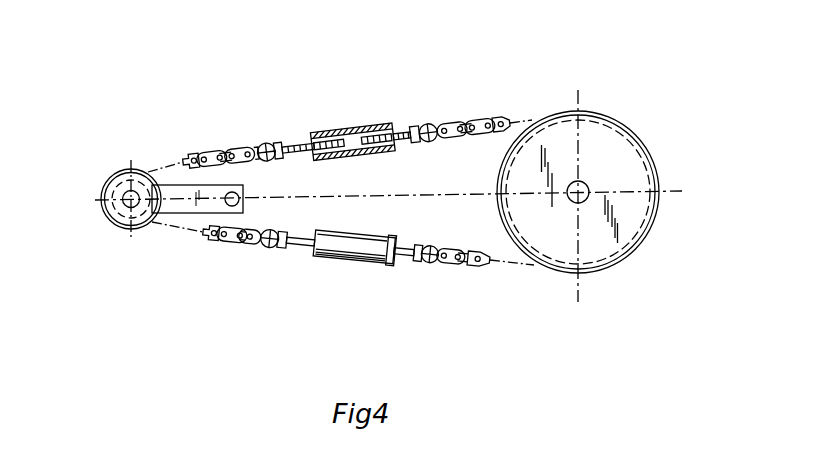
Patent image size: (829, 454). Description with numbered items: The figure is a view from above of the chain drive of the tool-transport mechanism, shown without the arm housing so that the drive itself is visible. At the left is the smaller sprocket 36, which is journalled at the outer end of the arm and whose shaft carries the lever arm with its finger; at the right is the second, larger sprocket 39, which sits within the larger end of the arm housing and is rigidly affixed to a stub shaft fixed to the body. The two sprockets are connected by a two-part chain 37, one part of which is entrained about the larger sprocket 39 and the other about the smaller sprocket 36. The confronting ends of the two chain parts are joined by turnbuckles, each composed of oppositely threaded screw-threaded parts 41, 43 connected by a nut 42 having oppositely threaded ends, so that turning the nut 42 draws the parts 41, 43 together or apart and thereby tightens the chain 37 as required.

The sprocket 36 is at (130, 178).
The two-part chain 37 is at (477, 120).
The sprocket 39 is at (618, 162).
The screw-threaded part 41 is at (287, 147).
The nut 42 is at (340, 127).
The screw-threaded part 43 is at (408, 127).